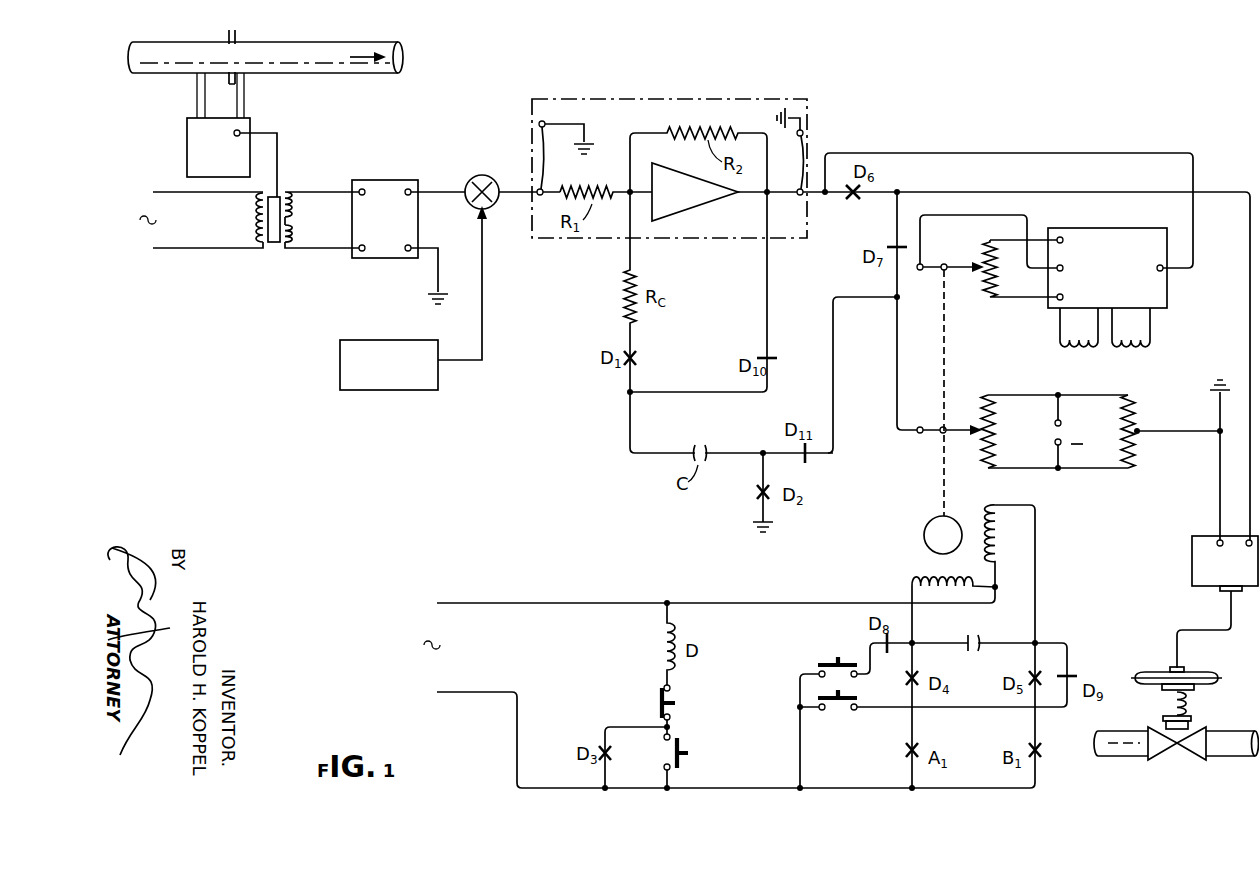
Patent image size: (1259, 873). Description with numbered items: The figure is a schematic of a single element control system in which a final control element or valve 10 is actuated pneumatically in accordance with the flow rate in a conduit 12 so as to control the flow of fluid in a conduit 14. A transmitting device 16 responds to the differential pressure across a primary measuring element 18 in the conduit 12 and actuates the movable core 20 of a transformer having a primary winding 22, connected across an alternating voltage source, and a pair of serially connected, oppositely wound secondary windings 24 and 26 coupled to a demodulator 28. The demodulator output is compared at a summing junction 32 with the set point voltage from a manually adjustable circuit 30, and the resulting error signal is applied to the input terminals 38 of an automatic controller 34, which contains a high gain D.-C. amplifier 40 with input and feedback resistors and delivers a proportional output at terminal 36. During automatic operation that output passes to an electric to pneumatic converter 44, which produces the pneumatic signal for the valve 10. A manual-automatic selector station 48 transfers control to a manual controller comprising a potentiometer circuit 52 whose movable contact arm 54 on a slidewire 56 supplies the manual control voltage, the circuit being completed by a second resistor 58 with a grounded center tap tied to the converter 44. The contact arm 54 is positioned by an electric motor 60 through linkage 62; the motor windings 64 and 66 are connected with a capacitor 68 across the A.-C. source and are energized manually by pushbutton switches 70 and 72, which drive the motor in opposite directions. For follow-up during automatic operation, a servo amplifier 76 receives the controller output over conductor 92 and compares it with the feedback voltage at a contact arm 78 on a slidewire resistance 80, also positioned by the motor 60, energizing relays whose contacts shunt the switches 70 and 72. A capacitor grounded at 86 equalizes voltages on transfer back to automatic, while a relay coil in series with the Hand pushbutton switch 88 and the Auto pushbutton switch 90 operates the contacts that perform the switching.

The valve 10 is at (1190, 697).
The conduit 12 is at (366, 74).
The conduit 14 is at (1133, 758).
The transmitting device 16 is at (187, 155).
The primary measuring element 18 is at (243, 68).
The movable core 20 is at (279, 196).
The primary winding 22 is at (247, 212).
The secondary winding 24 is at (303, 202).
The secondary winding 26 is at (303, 236).
The demodulator 28 is at (396, 228).
The manually adjustable circuit 30 is at (350, 390).
The summing junction 32 is at (480, 176).
The automatic controller 34 is at (652, 99).
The output terminal 36 is at (800, 176).
The input terminals 38 is at (545, 142).
The D.-C. amplifier 40 is at (705, 204).
The electric to pneumatic converter 44 is at (1190, 548).
The manual-automatic selector station 48 is at (857, 503).
The potentiometer circuit 52 is at (1040, 437).
The movable contact arm 54 is at (957, 424).
The slidewire 56 is at (995, 403).
The second resistor 58 is at (1140, 408).
The electric motor 60 is at (924, 535).
The linkage 62 is at (942, 481).
The energizing winding 64 is at (993, 533).
The energizing winding 66 is at (915, 576).
The capacitor 68 is at (975, 635).
The pushbutton switch 70 is at (818, 663).
The pushbutton switch 72 is at (838, 708).
The servo amplifier 76 is at (1105, 228).
The contact arm 78 is at (950, 264).
The slidewire resistance 80 is at (983, 293).
The ground 86 is at (755, 521).
The pushbutton switch 88 is at (660, 692).
The pushbutton switch 90 is at (665, 750).
The conductor 92 is at (998, 153).